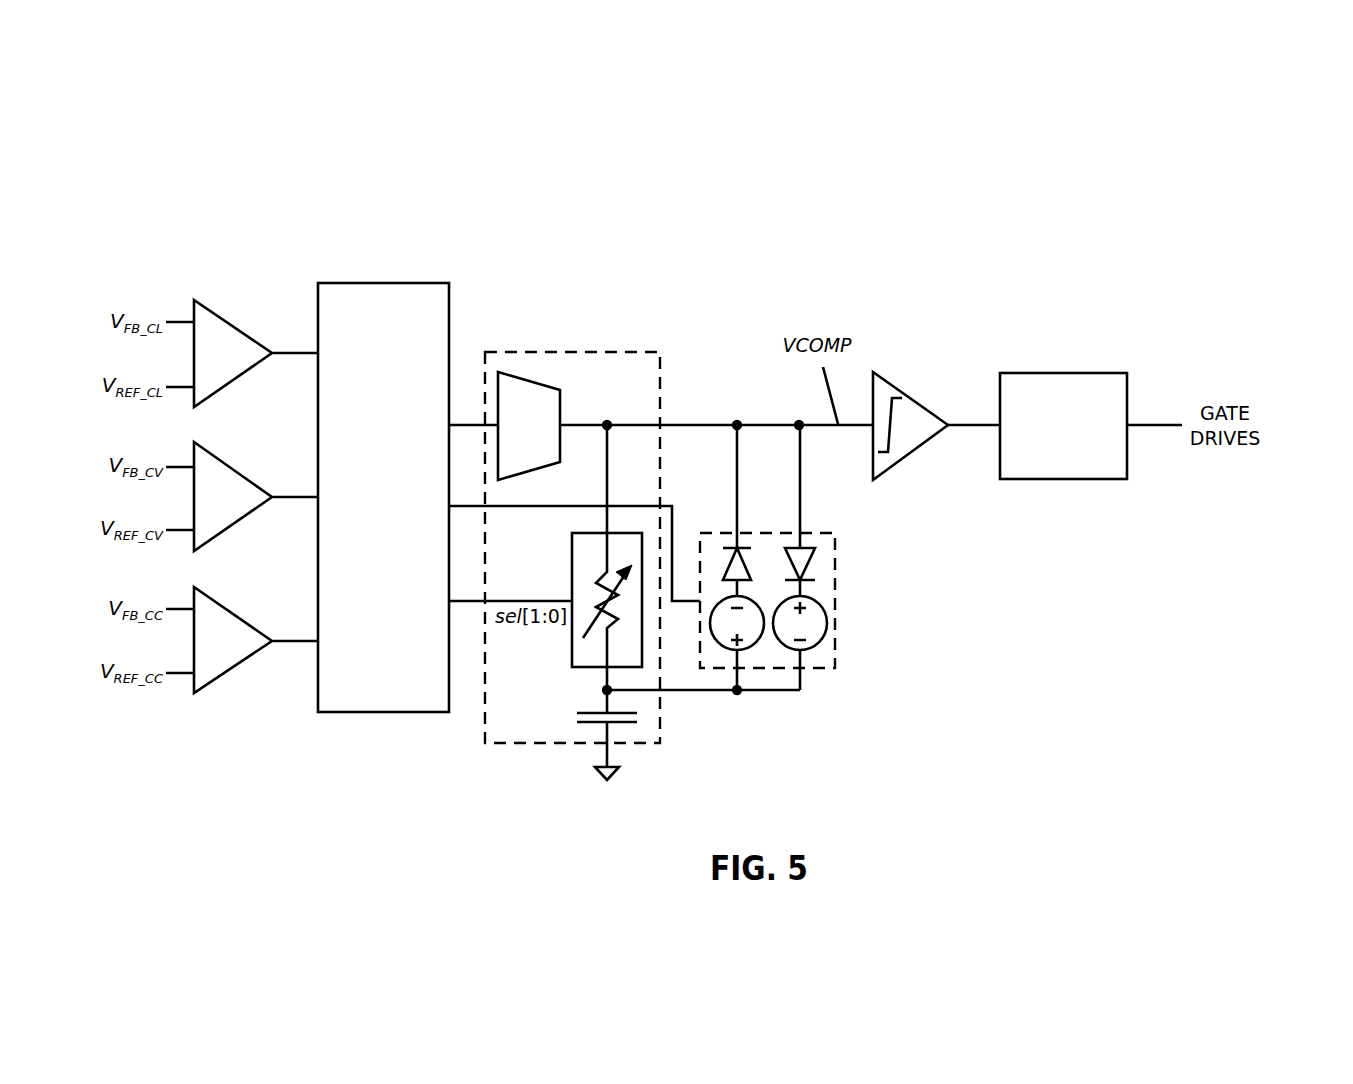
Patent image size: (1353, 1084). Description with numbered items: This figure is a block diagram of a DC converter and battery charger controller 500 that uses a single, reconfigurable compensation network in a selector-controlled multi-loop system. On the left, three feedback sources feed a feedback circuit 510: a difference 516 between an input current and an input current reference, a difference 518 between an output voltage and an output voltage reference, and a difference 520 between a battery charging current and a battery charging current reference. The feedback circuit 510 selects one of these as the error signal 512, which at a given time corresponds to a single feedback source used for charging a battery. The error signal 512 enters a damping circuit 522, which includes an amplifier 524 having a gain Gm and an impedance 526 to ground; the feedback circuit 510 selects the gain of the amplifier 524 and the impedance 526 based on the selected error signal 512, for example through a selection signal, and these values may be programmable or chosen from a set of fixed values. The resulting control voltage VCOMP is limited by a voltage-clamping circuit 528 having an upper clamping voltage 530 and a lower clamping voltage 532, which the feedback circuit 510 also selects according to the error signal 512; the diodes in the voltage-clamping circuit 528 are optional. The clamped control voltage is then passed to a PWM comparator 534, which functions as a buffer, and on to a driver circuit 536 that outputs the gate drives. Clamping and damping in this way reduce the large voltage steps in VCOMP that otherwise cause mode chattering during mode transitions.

The DC converter and battery charger controller 500 is at (1078, 194).
The feedback circuit 510 is at (383, 497).
The error signal 512 is at (469, 423).
The difference 516 is at (299, 351).
The difference 518 is at (290, 496).
The difference 520 is at (290, 637).
The damping circuit 522 is at (679, 520).
The amplifier 524 is at (529, 426).
The impedance 526 is at (578, 557).
The voltage-clamping circuit 528 is at (788, 579).
The upper clamping voltage 530 is at (808, 625).
The lower clamping voltage 532 is at (740, 622).
The PWM comparator 534 is at (887, 380).
The driver circuit 536 is at (1091, 426).